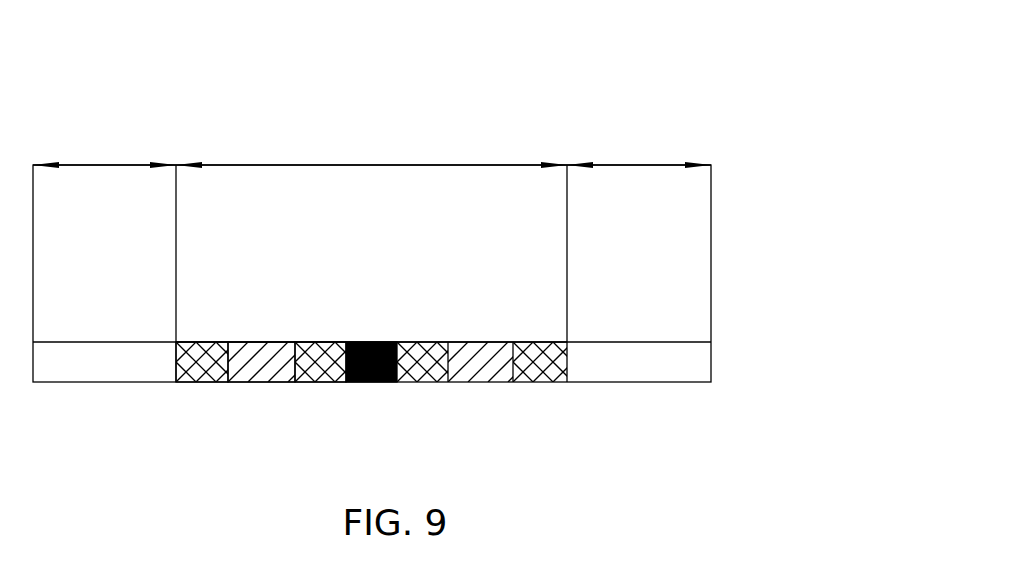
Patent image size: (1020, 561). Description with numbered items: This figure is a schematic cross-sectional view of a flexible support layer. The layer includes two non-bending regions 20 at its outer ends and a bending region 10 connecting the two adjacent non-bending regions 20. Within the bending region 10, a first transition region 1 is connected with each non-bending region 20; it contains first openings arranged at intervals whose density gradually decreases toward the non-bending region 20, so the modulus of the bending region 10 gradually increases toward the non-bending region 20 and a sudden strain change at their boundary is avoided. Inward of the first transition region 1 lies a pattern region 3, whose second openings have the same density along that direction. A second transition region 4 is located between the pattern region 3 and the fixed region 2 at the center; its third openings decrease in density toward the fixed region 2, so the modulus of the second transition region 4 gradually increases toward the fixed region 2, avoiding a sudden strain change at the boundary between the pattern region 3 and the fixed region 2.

The non-bending region 20 is at (110, 165).
The bending region 10 is at (379, 165).
The first transition region 1 is at (202, 342).
The pattern region 3 is at (265, 342).
The second transition region 4 is at (322, 342).
The fixed region 2 is at (372, 342).